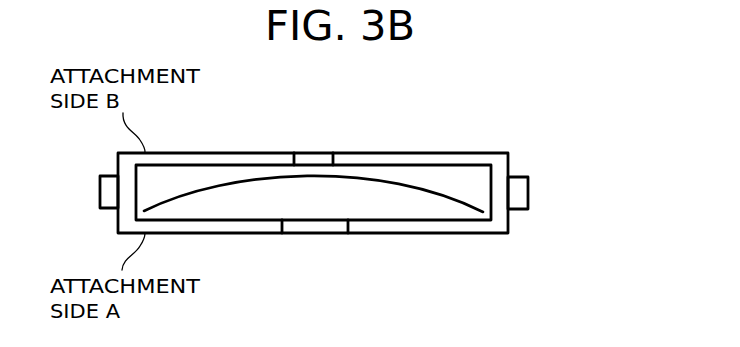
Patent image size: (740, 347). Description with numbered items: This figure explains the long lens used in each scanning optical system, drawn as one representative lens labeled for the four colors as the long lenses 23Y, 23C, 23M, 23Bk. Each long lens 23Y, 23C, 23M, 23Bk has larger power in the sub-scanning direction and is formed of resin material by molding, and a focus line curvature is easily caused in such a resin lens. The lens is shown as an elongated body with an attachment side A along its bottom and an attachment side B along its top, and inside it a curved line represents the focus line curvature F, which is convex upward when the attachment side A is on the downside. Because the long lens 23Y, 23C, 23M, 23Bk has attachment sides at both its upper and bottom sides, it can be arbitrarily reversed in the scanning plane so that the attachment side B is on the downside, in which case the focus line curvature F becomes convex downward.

The long lens 23Y is at (422, 152).
The long lens 23C is at (314, 193).
The long lens 23M is at (314, 193).
The long lens 23Bk is at (314, 193).
The focus line curvature F is at (356, 177).